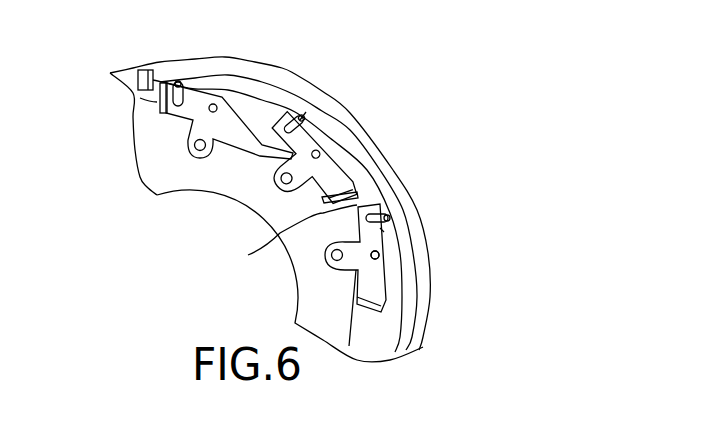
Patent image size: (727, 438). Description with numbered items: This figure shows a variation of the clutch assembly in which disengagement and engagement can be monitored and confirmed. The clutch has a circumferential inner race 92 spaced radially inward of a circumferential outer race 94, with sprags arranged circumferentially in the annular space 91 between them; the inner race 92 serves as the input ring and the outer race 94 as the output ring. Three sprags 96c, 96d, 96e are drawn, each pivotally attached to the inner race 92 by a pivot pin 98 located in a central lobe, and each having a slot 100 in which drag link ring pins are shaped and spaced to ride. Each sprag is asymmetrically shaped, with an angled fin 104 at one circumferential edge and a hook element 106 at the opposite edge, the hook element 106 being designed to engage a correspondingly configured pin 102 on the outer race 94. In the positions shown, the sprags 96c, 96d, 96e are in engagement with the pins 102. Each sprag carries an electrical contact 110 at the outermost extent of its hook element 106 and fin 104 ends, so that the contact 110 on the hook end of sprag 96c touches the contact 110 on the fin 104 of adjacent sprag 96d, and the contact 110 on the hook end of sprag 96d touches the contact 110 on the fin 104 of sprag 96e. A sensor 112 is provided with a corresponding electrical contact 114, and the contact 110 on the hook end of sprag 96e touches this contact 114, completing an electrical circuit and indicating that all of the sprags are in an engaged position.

The annular space 91 is at (137, 133).
The inner race 92 is at (214, 177).
The outer race 94 is at (150, 100).
The sprag 96c is at (390, 216).
The sprag 96d is at (346, 150).
The sprag 96e is at (228, 95).
The pivot pin 98 is at (334, 255).
The slot 100 is at (379, 255).
The pin 102 is at (383, 234).
The angled fin 104 is at (252, 253).
The hook element 106 is at (305, 114).
The electrical contact element 110 is at (147, 113).
The sensor 112 is at (137, 76).
The electrical contact 114 is at (155, 68).